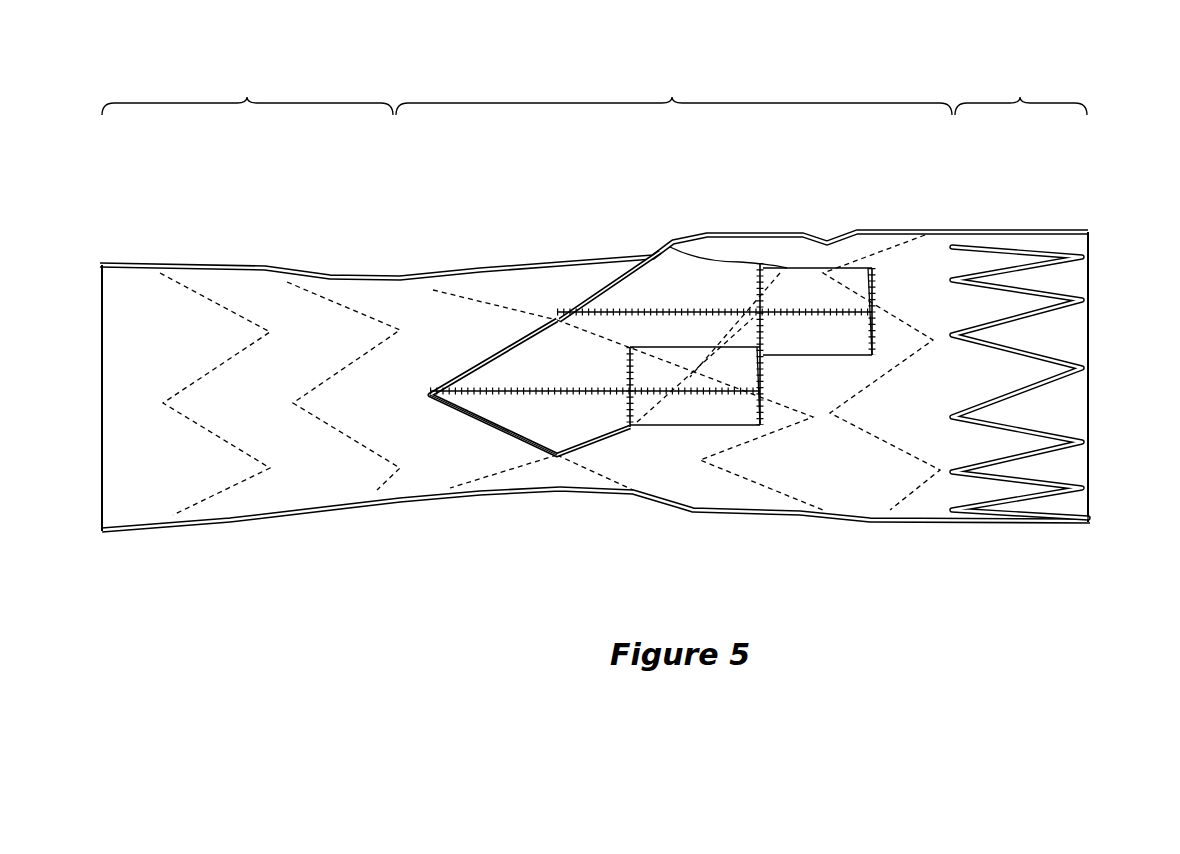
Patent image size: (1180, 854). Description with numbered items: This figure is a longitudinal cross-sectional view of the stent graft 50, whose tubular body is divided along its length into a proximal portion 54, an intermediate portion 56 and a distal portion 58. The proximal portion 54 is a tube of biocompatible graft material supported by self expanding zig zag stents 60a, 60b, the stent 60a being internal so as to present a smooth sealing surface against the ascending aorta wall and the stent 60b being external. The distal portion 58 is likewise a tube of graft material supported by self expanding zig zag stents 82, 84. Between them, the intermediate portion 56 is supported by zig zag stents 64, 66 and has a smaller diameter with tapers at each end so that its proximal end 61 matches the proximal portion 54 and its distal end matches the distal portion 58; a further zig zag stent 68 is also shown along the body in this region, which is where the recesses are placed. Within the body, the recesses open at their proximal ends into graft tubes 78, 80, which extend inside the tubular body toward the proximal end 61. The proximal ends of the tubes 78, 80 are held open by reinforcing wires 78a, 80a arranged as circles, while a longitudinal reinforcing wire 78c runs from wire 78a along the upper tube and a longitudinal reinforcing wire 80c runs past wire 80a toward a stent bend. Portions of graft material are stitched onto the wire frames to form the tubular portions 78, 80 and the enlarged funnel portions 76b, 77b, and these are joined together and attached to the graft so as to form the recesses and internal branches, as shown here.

The stent graft 50 is at (212, 244).
The proximal portion 54 is at (1021, 93).
The intermediate portion 56 is at (674, 93).
The distal portion 58 is at (247, 93).
The internal zig zag stent 60a is at (1092, 463).
The external zig zag stent 60b is at (888, 497).
The proximal end 61 is at (1108, 322).
The zig zag stent 64 is at (770, 507).
The zig zag stent 66 is at (590, 490).
The stent 68 is at (483, 490).
The enlarged funnel portion 76b is at (663, 283).
The enlarged funnel portion 77b is at (552, 437).
The graft tube 78 is at (803, 268).
The reinforcing wire 78a is at (870, 308).
The longitudinal reinforcing wire 78c is at (715, 306).
The graft tube 80 is at (677, 428).
The reinforcing wire 80a is at (763, 403).
The longitudinal reinforcing wire 80c is at (508, 390).
The zig zag stent 82 is at (377, 495).
The zig zag stent 84 is at (228, 497).